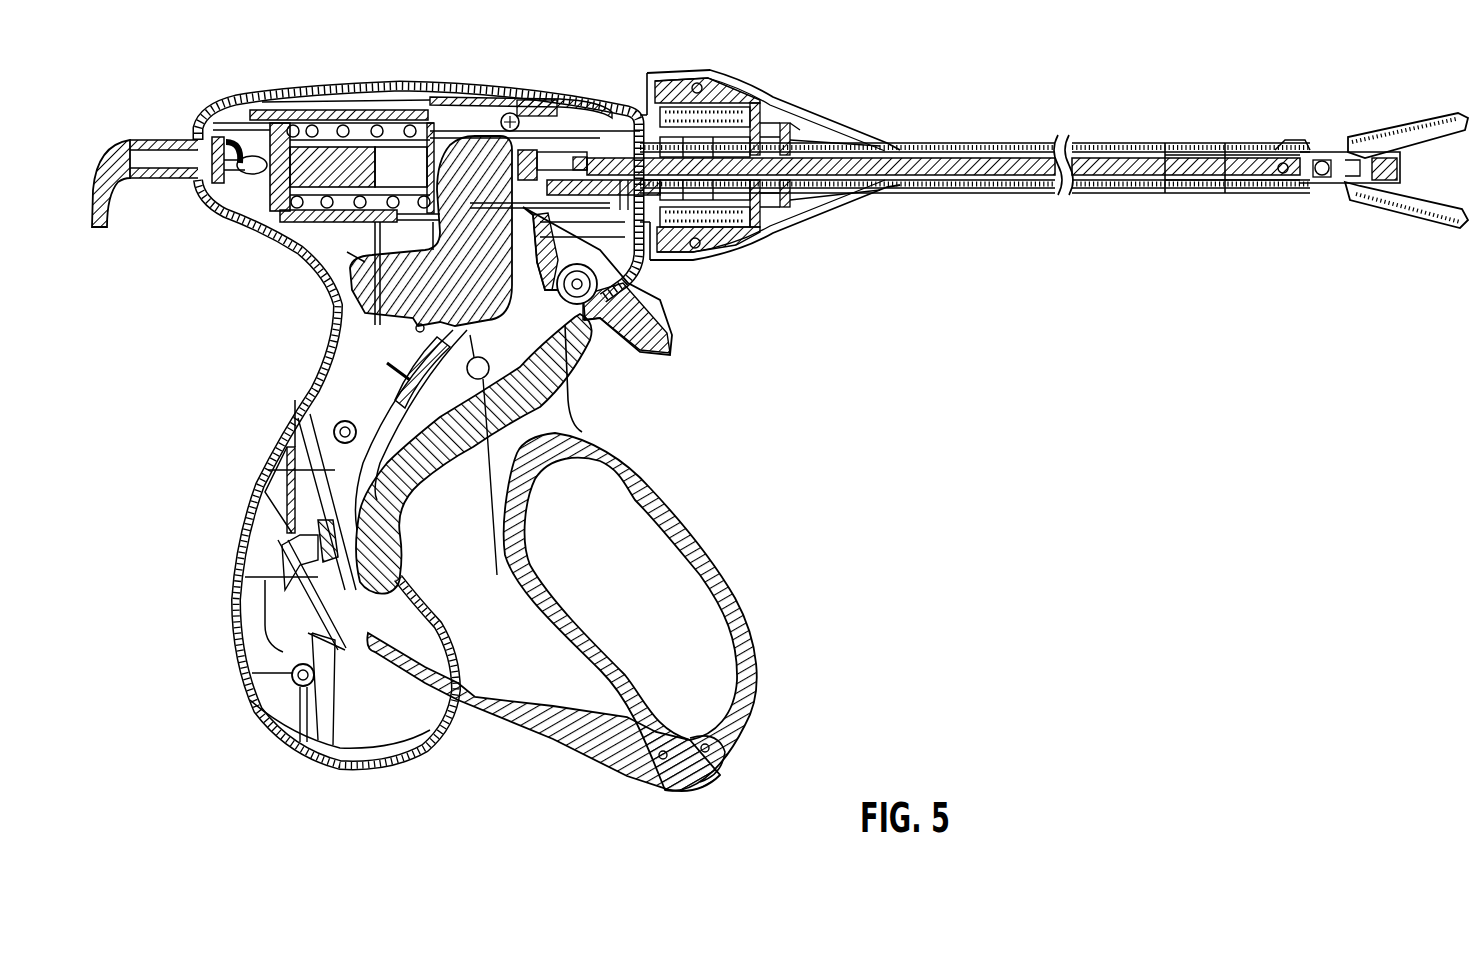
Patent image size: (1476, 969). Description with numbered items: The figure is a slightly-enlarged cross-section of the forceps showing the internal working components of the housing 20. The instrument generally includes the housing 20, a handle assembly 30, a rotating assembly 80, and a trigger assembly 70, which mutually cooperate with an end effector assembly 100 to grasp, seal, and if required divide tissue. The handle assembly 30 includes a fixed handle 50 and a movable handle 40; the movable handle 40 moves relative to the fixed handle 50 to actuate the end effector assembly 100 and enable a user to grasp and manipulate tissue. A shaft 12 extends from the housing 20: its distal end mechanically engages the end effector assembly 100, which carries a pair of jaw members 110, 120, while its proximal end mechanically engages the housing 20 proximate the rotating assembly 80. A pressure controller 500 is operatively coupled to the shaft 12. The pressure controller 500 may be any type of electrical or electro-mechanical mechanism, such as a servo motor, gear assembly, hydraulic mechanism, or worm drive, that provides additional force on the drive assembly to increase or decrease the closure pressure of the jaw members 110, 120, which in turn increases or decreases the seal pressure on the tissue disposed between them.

The shaft 12 is at (962, 190).
The housing 20 is at (288, 80).
The handle assembly 30 is at (750, 502).
The movable handle 40 is at (760, 648).
The fixed handle 50 is at (364, 776).
The trigger assembly 70 is at (670, 325).
The rotating assembly 80 is at (727, 72).
The end effector assembly 100 is at (1300, 200).
The jaw member 110 is at (1380, 118).
The jaw member 120 is at (1374, 215).
The pressure controller 500 is at (1193, 143).